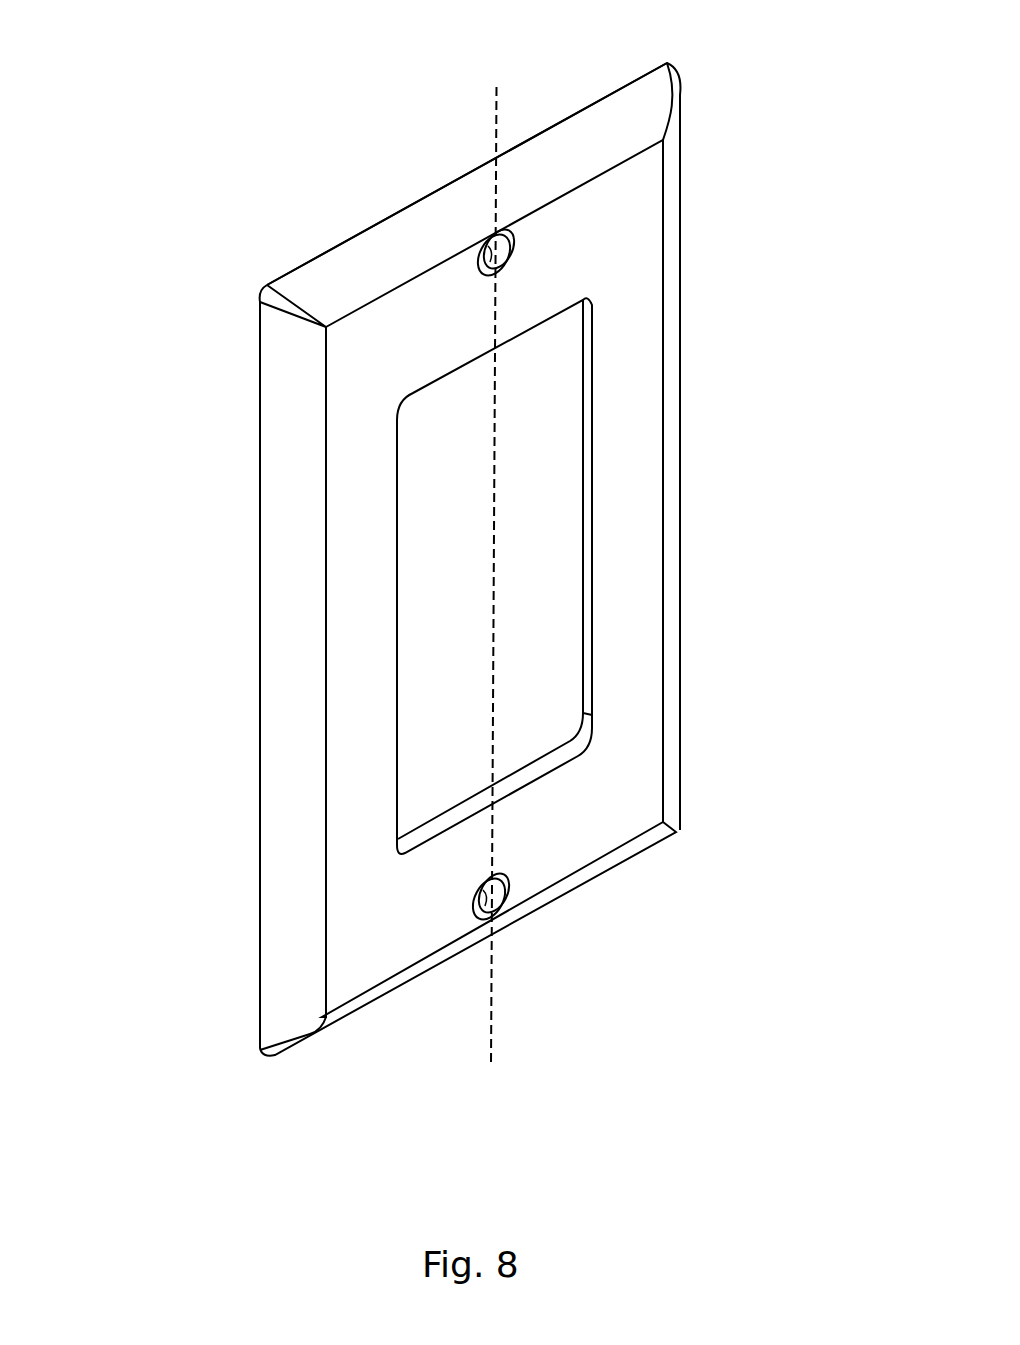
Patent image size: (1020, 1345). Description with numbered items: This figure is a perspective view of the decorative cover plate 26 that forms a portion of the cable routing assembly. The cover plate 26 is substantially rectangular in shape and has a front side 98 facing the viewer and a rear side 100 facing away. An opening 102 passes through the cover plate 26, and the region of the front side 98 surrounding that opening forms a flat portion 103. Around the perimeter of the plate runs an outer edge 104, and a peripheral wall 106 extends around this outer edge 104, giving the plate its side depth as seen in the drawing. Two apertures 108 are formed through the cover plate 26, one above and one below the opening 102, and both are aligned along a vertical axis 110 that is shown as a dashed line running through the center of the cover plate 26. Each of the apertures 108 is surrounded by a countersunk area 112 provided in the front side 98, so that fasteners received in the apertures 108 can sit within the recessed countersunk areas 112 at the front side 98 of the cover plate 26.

The cover plate 26 is at (146, 190).
The front side 98 is at (630, 430).
The rear side 100 is at (258, 443).
The opening 102 is at (545, 547).
The flat portion 103 is at (397, 371).
The outer edge 104 is at (663, 355).
The peripheral wall 106 is at (582, 133).
The apertures 108 is at (480, 240).
The vertical axis 110 is at (492, 1020).
The countersunk areas 112 is at (503, 247).